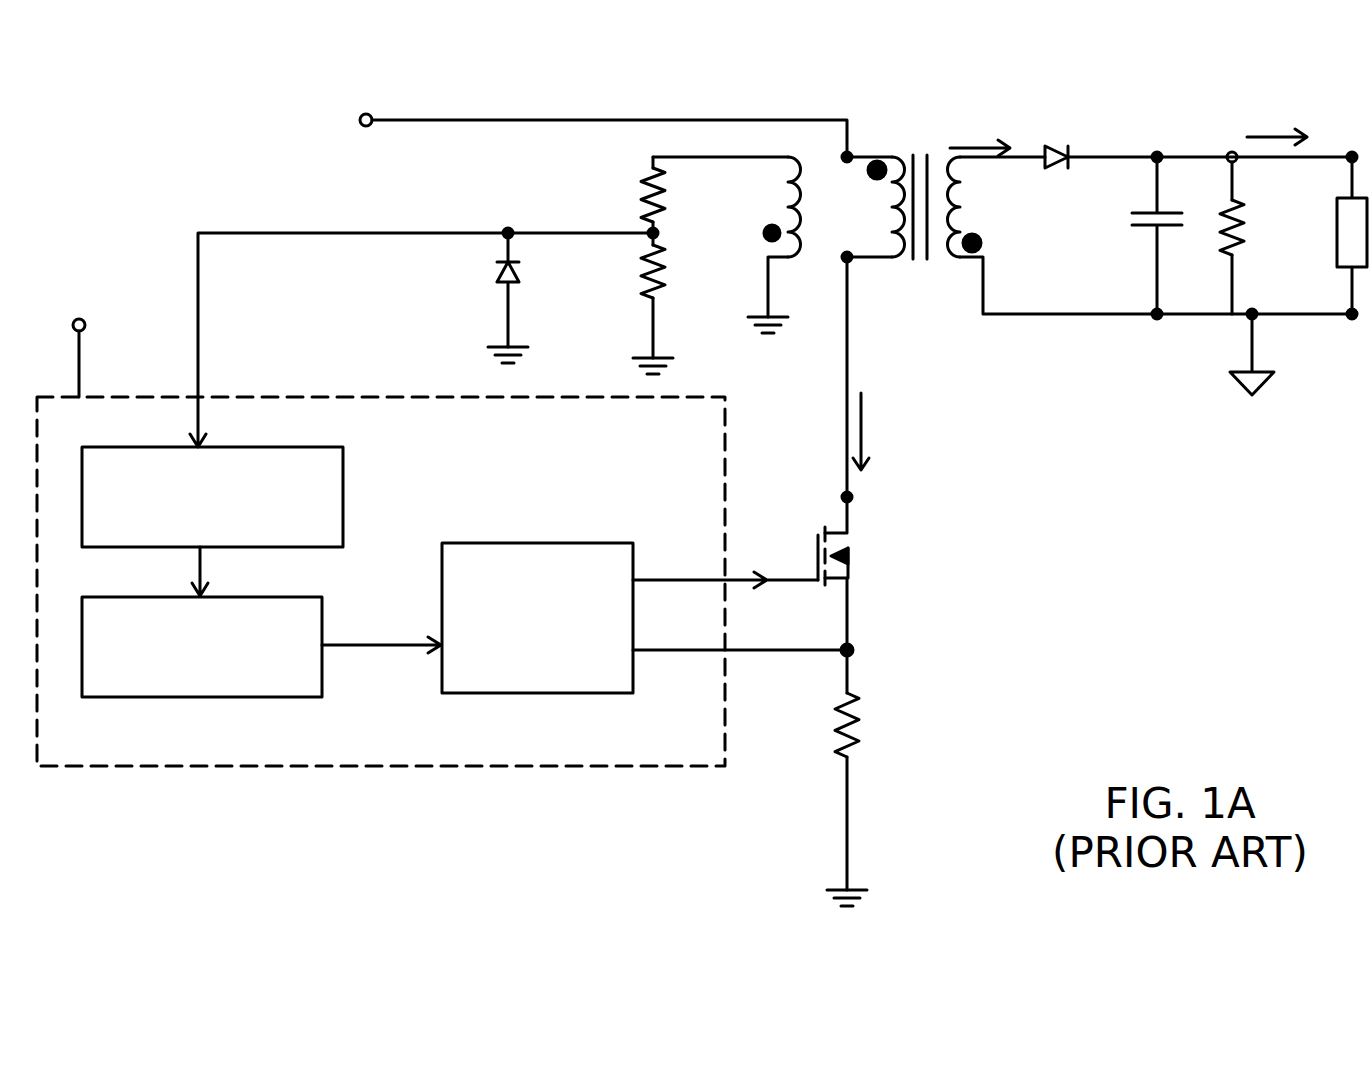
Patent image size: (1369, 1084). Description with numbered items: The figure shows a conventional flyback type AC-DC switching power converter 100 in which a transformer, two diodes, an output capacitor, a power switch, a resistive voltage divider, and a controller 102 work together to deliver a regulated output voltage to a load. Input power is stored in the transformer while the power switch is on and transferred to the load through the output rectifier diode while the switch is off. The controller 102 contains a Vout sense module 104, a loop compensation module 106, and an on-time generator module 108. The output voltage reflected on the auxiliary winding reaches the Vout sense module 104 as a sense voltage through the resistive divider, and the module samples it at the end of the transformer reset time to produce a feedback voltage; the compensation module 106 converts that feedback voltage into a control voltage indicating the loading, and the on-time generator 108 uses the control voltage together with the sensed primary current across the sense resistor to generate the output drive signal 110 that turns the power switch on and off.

The power converter 100 is at (1028, 583).
The controller 102 is at (616, 477).
The Vout sense module 104 is at (190, 527).
The loop compensation module 106 is at (180, 675).
The on-time (Ton) generator module 108 is at (515, 663).
The output drive signal 110 is at (647, 582).